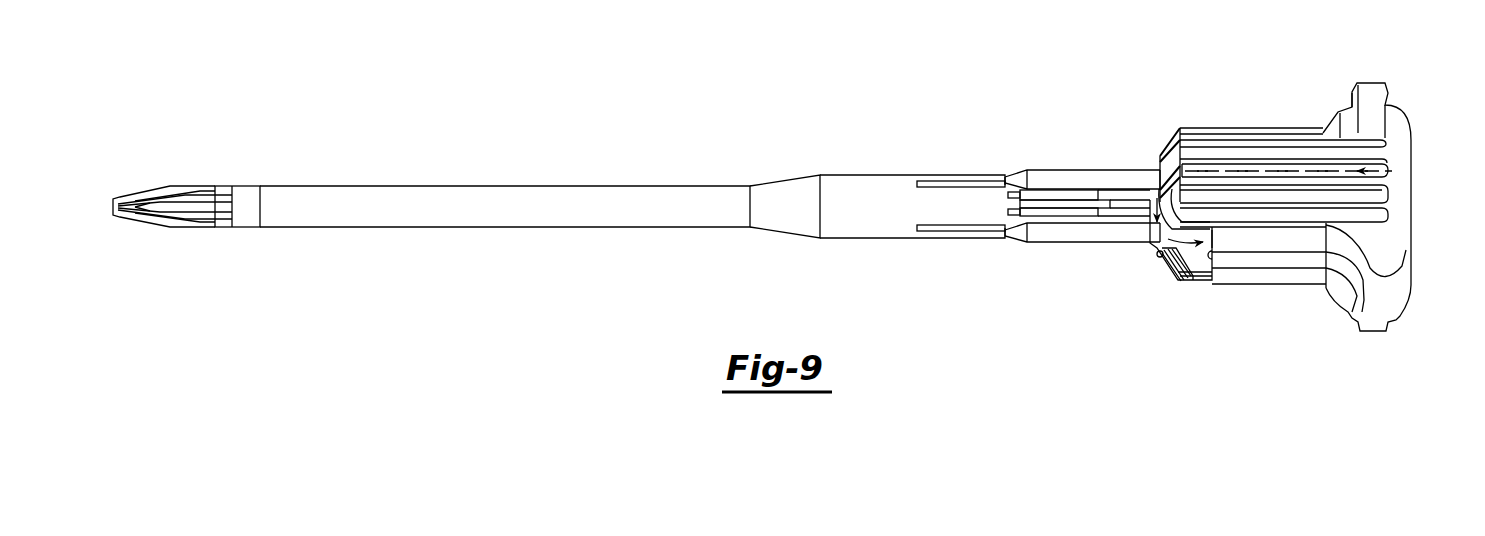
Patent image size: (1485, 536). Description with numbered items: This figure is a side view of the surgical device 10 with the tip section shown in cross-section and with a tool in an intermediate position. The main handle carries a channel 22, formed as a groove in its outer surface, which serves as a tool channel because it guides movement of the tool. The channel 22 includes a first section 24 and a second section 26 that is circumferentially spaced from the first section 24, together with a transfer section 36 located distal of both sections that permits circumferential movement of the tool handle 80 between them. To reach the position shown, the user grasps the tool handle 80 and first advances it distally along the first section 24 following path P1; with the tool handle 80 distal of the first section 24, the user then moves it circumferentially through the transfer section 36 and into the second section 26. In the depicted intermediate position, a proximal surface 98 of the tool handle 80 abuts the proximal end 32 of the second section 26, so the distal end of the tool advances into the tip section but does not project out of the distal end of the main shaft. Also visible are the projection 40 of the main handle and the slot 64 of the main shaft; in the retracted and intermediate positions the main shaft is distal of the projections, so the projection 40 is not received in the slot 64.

The surgical device 10 is at (223, 125).
The channel 22 is at (1396, 170).
The first section 24 is at (1388, 158).
The second section 26 is at (1214, 229).
The proximal end 32 is at (1225, 238).
The transfer section 36 is at (1157, 195).
The projection 40 is at (1055, 168).
The slot 64 is at (945, 182).
The tool handle 80 is at (1163, 270).
The proximal surface 98 is at (1222, 258).
The path P1 is at (1248, 170).